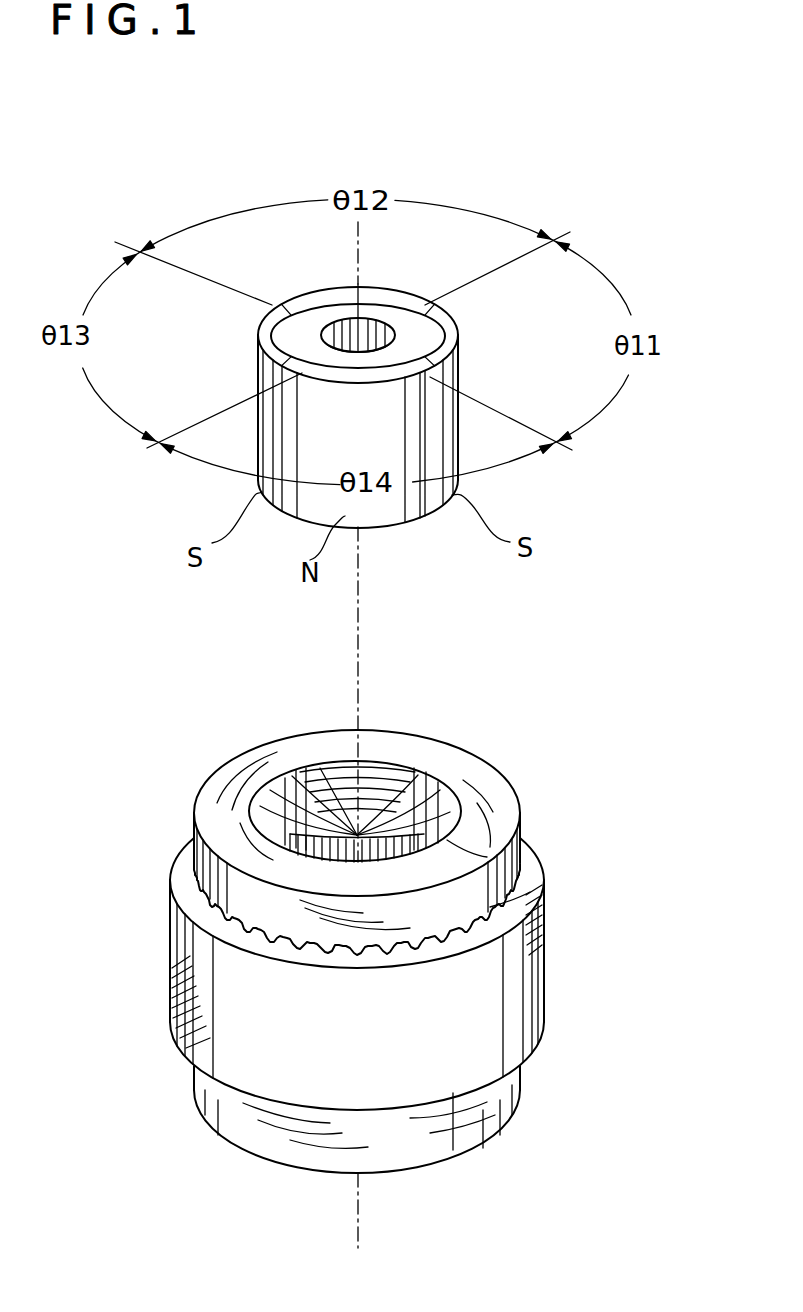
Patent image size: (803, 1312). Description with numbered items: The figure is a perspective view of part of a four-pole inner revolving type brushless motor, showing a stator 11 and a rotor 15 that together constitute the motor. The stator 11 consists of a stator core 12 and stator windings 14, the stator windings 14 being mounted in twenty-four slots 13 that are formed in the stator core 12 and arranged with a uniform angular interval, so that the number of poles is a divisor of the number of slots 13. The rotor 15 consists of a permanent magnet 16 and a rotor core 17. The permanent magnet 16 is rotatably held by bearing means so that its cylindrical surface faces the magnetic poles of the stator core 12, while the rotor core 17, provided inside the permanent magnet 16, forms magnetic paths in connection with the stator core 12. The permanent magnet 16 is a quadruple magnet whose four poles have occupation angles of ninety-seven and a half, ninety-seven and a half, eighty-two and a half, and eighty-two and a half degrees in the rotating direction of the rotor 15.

The stator 11 is at (193, 792).
The stator core 12 is at (519, 1004).
The slots 13 is at (360, 833).
The stator windings 14 is at (511, 818).
The rotor 15 is at (309, 287).
The permanent magnet 16 is at (455, 323).
The rotor core 17 is at (298, 338).